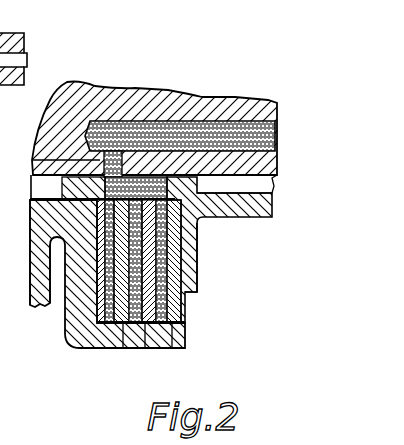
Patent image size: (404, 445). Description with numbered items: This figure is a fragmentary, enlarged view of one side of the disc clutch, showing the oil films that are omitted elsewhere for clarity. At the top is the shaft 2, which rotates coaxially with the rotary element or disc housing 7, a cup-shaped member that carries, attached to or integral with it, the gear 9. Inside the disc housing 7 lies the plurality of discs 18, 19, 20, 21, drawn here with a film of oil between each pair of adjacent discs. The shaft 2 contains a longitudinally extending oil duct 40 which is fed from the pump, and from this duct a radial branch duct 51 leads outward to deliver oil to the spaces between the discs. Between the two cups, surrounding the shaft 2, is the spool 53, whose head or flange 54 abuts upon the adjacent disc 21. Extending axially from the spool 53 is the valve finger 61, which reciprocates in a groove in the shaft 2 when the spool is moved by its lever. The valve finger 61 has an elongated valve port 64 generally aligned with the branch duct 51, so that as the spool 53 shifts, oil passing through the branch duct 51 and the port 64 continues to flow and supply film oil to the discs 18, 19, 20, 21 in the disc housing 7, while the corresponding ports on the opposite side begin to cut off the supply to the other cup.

The shaft 2 is at (203, 99).
The oil duct 40 is at (235, 118).
The radial branch duct 51 is at (33, 161).
The valve finger 61 is at (32, 190).
The valve port 64 is at (199, 186).
The spool 53 is at (231, 217).
The head 54 is at (197, 264).
The gear 9 is at (38, 305).
The disc 18 is at (73, 346).
The disc housing 7 is at (98, 338).
The disc 19 is at (117, 347).
The disc 20 is at (145, 347).
The disc 21 is at (173, 346).